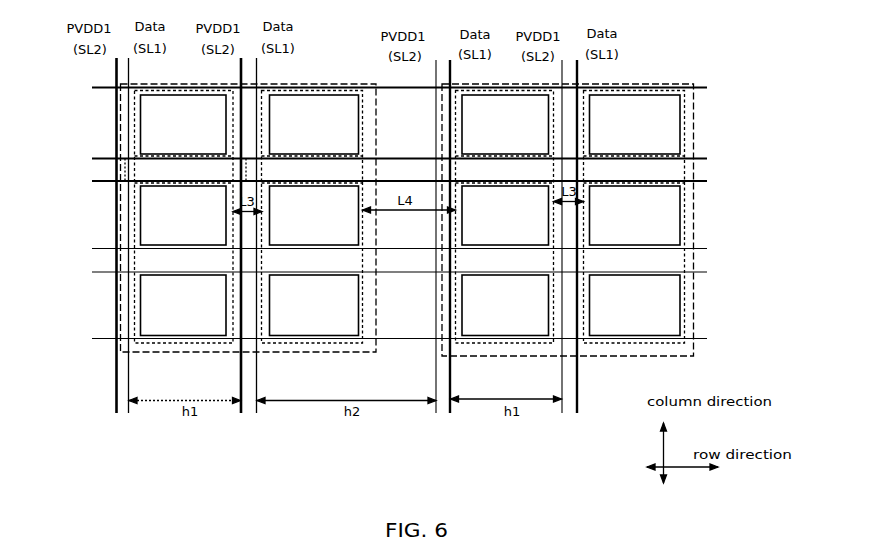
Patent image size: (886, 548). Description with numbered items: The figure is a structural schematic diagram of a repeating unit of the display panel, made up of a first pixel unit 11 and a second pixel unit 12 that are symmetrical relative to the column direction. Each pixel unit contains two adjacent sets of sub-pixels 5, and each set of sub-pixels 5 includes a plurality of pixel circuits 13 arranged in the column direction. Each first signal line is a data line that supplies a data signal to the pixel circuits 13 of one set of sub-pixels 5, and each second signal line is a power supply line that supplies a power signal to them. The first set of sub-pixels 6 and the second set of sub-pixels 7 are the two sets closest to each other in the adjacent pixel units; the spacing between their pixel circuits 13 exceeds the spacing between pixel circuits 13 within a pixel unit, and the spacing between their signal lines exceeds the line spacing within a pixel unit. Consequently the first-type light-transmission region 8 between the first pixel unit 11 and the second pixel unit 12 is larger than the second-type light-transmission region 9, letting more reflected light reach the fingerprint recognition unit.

The set of sub-pixels 5 is at (188, 349).
The first set of sub-pixels 6 is at (320, 343).
The second set of sub-pixels 7 is at (503, 347).
The first-type light-transmission region 8 is at (403, 157).
The second-type light-transmission region 9 is at (126, 174).
The first pixel unit 11 is at (119, 207).
The second pixel unit 12 is at (694, 212).
The pixel circuit 13 is at (600, 334).